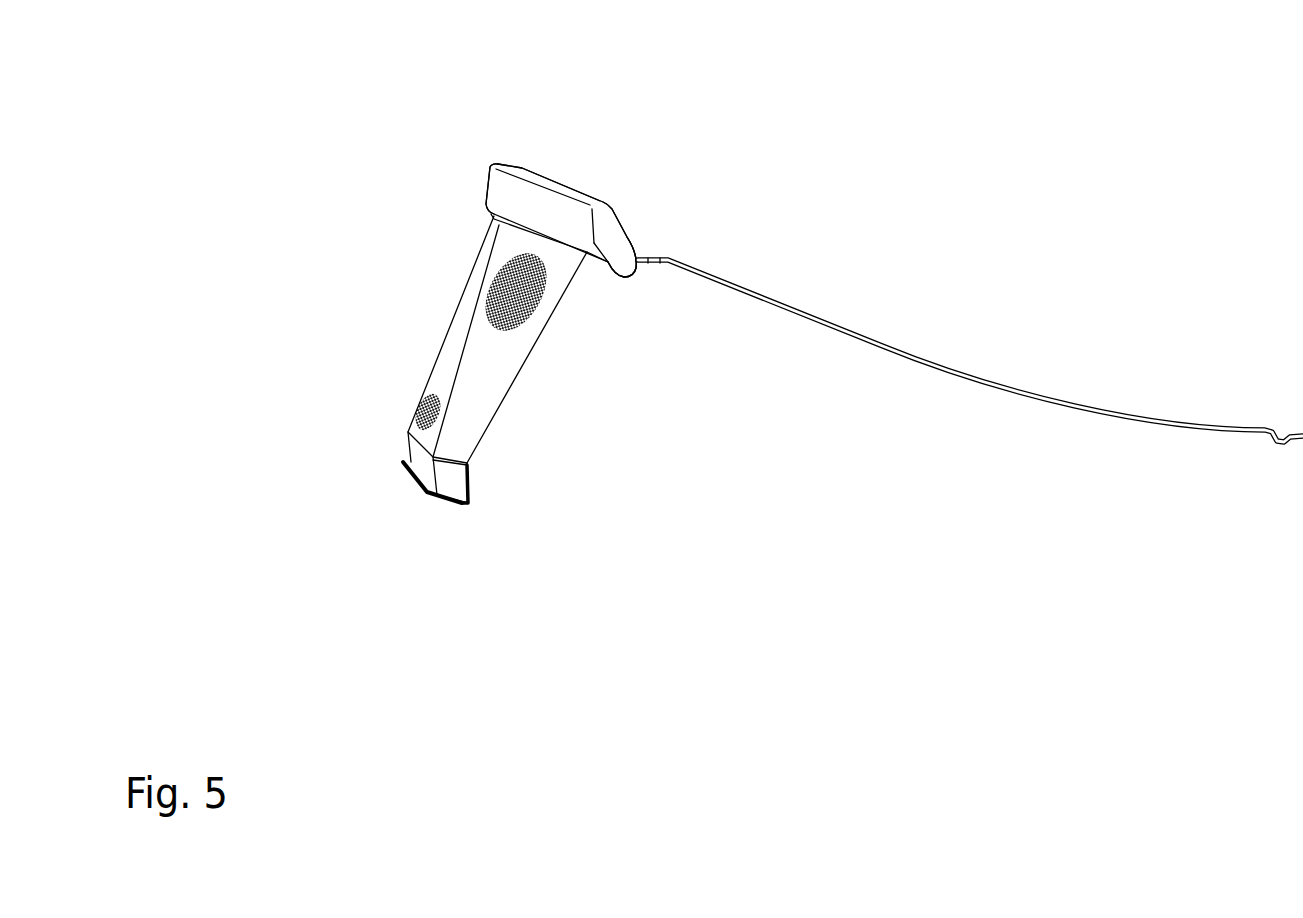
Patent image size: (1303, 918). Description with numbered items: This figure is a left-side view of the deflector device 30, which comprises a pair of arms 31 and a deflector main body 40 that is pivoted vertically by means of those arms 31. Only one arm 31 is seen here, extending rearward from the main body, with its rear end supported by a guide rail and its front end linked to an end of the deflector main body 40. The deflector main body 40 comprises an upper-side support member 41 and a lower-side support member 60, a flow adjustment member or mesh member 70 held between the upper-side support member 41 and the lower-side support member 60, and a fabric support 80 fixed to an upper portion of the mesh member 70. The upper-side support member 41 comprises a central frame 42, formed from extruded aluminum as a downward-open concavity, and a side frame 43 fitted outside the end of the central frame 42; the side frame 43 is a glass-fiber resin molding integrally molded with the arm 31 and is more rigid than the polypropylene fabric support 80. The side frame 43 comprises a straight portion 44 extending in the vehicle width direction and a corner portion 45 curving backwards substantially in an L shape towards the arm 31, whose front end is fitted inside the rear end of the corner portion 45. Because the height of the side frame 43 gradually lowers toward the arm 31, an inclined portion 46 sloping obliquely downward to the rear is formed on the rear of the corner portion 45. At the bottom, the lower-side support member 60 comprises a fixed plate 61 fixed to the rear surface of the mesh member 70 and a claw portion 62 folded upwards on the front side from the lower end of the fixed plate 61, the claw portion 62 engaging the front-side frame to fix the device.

The deflector device 30 is at (425, 128).
The arm 31 is at (850, 337).
The deflector main body 40 is at (523, 157).
The upper-side support member 41 is at (503, 163).
The central frame 42 is at (487, 183).
The side frame 43 is at (597, 197).
The straight portion 44 is at (555, 205).
The corner portion 45 is at (608, 220).
The inclined portion 46 is at (625, 265).
The lower-side support member 60 is at (457, 508).
The fixed plate 61 is at (470, 490).
The claw portion 62 is at (412, 480).
The mesh member 70 is at (448, 343).
The fabric support 80 is at (490, 212).